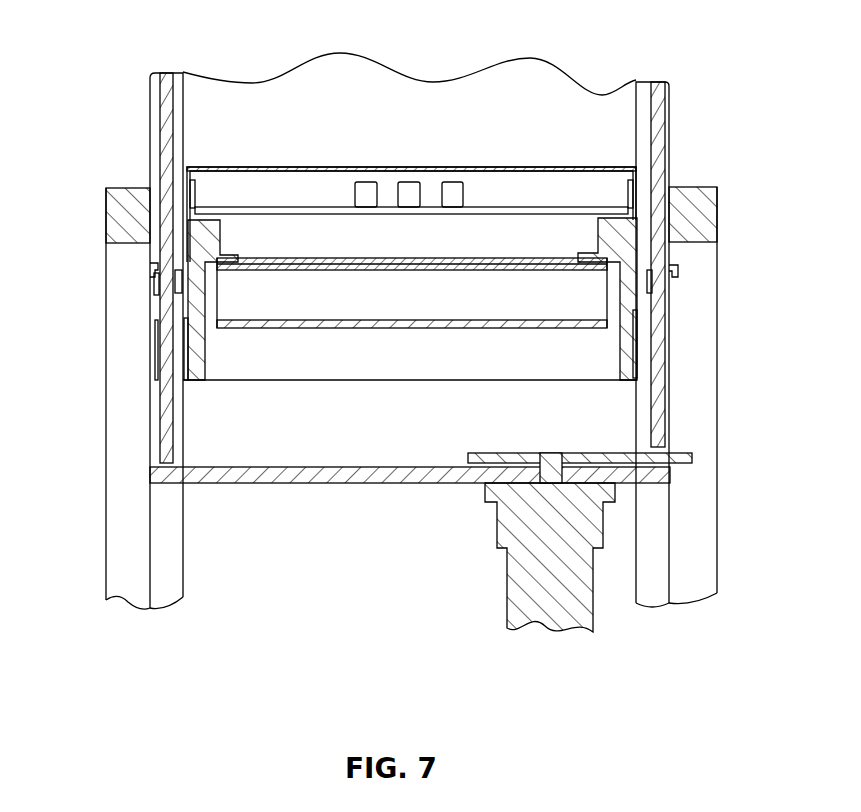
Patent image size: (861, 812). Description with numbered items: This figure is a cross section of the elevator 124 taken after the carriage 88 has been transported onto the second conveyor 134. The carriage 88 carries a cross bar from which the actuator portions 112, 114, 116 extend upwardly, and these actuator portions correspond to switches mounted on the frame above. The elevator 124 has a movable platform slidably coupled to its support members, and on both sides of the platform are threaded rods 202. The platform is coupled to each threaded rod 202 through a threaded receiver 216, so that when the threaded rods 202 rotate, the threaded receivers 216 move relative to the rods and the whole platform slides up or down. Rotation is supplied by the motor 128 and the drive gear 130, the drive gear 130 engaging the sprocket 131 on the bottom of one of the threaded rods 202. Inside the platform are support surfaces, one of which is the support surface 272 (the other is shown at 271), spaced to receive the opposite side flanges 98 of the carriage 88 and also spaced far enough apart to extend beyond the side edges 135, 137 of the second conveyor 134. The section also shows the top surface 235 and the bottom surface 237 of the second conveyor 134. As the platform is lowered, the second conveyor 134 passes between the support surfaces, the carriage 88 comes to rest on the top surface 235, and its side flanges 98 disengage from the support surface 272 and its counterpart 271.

The carriage 88 is at (553, 207).
The side flanges 98 is at (195, 226).
The actuator portion 112 is at (363, 182).
The actuator portion 114 is at (409, 182).
The actuator portion 116 is at (455, 182).
The elevator 124 is at (188, 182).
The motor 128 is at (540, 587).
The drive gear 130 is at (478, 467).
The sprocket 131 is at (673, 463).
The second conveyor 134 is at (410, 405).
The side edge 135 is at (607, 310).
The side edge 137 is at (217, 307).
The threaded rods 202 is at (168, 426).
The threaded receiver 216 is at (150, 268).
The top surface 235 is at (575, 270).
The bottom surface 237 is at (190, 318).
The flange 271 is at (634, 223).
The support surface 272 is at (150, 218).